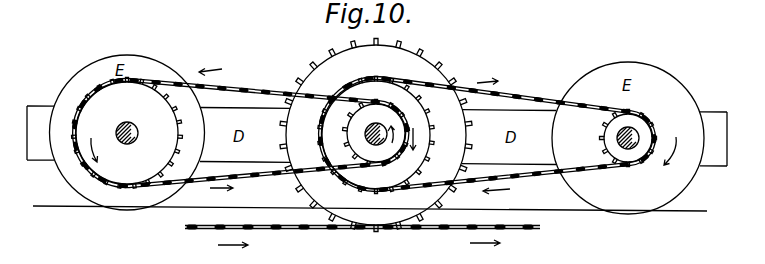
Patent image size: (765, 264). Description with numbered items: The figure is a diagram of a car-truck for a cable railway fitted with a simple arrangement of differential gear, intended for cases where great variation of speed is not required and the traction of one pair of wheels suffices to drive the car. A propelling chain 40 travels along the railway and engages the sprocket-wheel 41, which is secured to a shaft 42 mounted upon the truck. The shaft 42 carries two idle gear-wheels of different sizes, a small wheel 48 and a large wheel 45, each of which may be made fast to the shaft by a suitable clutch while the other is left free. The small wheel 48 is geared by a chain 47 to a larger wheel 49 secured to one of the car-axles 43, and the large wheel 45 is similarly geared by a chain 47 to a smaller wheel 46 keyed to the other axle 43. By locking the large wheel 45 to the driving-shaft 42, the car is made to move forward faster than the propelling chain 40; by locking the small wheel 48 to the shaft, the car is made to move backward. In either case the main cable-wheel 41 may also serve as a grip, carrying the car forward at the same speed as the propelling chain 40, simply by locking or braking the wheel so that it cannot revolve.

The propelling chain 40 is at (312, 229).
The sprocket-wheel 41 is at (376, 135).
The shaft 42 is at (375, 131).
The car-axle 43 is at (125, 125).
The gear-wheel 45 is at (327, 143).
The second gear-wheel 46 is at (609, 146).
The chain 47 is at (265, 92).
The small gear-wheel 48 is at (356, 128).
The larger wheel 49 is at (127, 133).